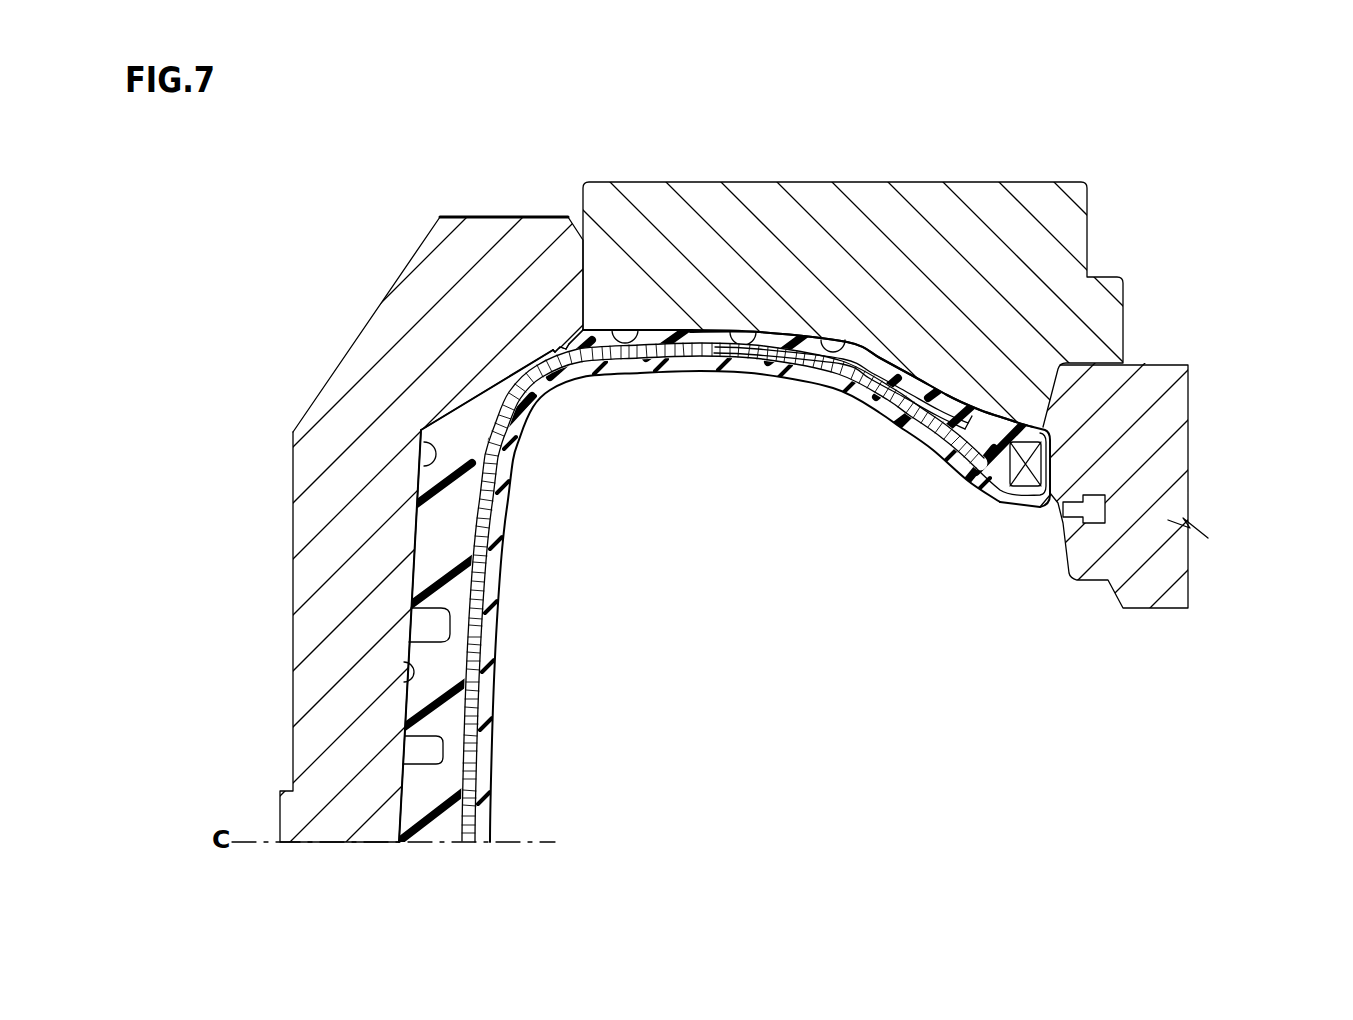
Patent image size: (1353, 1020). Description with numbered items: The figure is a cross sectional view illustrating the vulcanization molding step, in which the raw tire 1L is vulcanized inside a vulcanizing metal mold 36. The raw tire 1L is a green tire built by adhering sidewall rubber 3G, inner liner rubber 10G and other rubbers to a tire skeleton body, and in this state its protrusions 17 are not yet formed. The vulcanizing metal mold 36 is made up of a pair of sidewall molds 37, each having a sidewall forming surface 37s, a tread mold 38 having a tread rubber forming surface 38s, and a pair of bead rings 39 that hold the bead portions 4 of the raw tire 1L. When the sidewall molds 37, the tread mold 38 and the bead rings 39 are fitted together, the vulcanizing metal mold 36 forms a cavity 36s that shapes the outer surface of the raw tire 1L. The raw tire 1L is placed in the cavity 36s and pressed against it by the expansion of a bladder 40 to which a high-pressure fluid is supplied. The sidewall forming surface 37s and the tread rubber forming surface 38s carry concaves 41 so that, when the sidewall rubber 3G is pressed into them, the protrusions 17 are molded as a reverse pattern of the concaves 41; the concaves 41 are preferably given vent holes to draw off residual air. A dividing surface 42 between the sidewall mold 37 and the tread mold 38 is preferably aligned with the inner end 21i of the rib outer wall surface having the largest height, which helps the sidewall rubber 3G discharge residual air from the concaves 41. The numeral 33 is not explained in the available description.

The raw tire 1L is at (830, 477).
The sidewall rubber 3G is at (620, 347).
The bead portion 4 is at (1052, 427).
The inner liner rubber 10G is at (472, 697).
The protrusion 17 is at (662, 328).
The inner end of outer wall surface 21i is at (553, 348).
The sipe blade 33 is at (560, 347).
The vulcanizing metal mold 36 is at (372, 217).
The cavity 36s is at (420, 488).
The sidewall mold 37 is at (1007, 230).
The sidewall forming surface 37s is at (842, 345).
The tread mold 38 is at (335, 580).
The tread rubber forming surface 38s is at (404, 680).
The bead ring 39 is at (1160, 413).
The bladder 40 is at (1040, 507).
The concave 41 is at (612, 330).
The dividing surface 42 is at (578, 331).